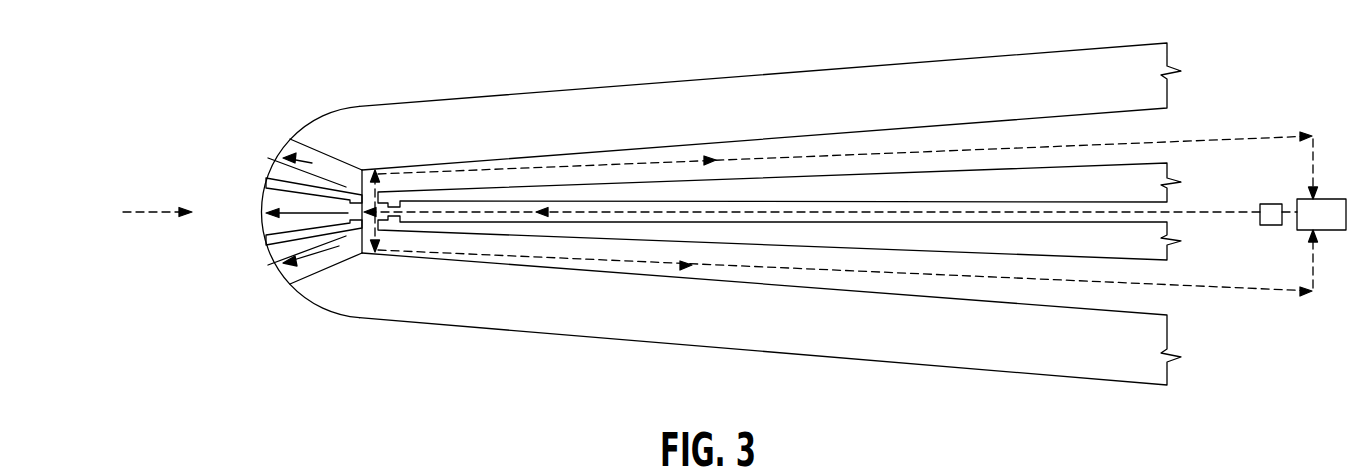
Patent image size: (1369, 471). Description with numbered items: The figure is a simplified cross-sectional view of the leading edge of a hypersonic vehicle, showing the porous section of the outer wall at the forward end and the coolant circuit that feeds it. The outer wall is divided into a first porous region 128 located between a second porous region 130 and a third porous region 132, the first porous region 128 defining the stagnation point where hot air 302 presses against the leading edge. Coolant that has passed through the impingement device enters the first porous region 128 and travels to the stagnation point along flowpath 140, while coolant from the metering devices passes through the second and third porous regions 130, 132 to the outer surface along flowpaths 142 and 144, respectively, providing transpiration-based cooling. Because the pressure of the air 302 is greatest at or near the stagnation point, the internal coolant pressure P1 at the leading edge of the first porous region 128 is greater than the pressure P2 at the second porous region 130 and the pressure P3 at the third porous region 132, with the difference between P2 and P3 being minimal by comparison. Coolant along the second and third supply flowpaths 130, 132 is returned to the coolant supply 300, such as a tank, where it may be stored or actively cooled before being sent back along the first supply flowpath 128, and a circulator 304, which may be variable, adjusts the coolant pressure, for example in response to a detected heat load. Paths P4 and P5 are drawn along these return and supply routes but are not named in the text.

The first porous region 128 is at (686, 213).
The second porous region 130 is at (795, 268).
The third porous region 132 is at (794, 153).
The flowpath 140 is at (303, 216).
The flowpath 142 is at (328, 248).
The flowpath 144 is at (321, 172).
The coolant supply 300 is at (1337, 199).
The air 302 is at (154, 211).
The circulator 304 is at (1272, 204).
The internal pressure of the coolant at the first porous region P1 is at (300, 213).
The internal pressure of the coolant at the second porous region P2 is at (300, 257).
The internal pressure of the coolant at the third porous region P3 is at (312, 163).
The path P4 is at (372, 328).
The path P5 is at (432, 210).